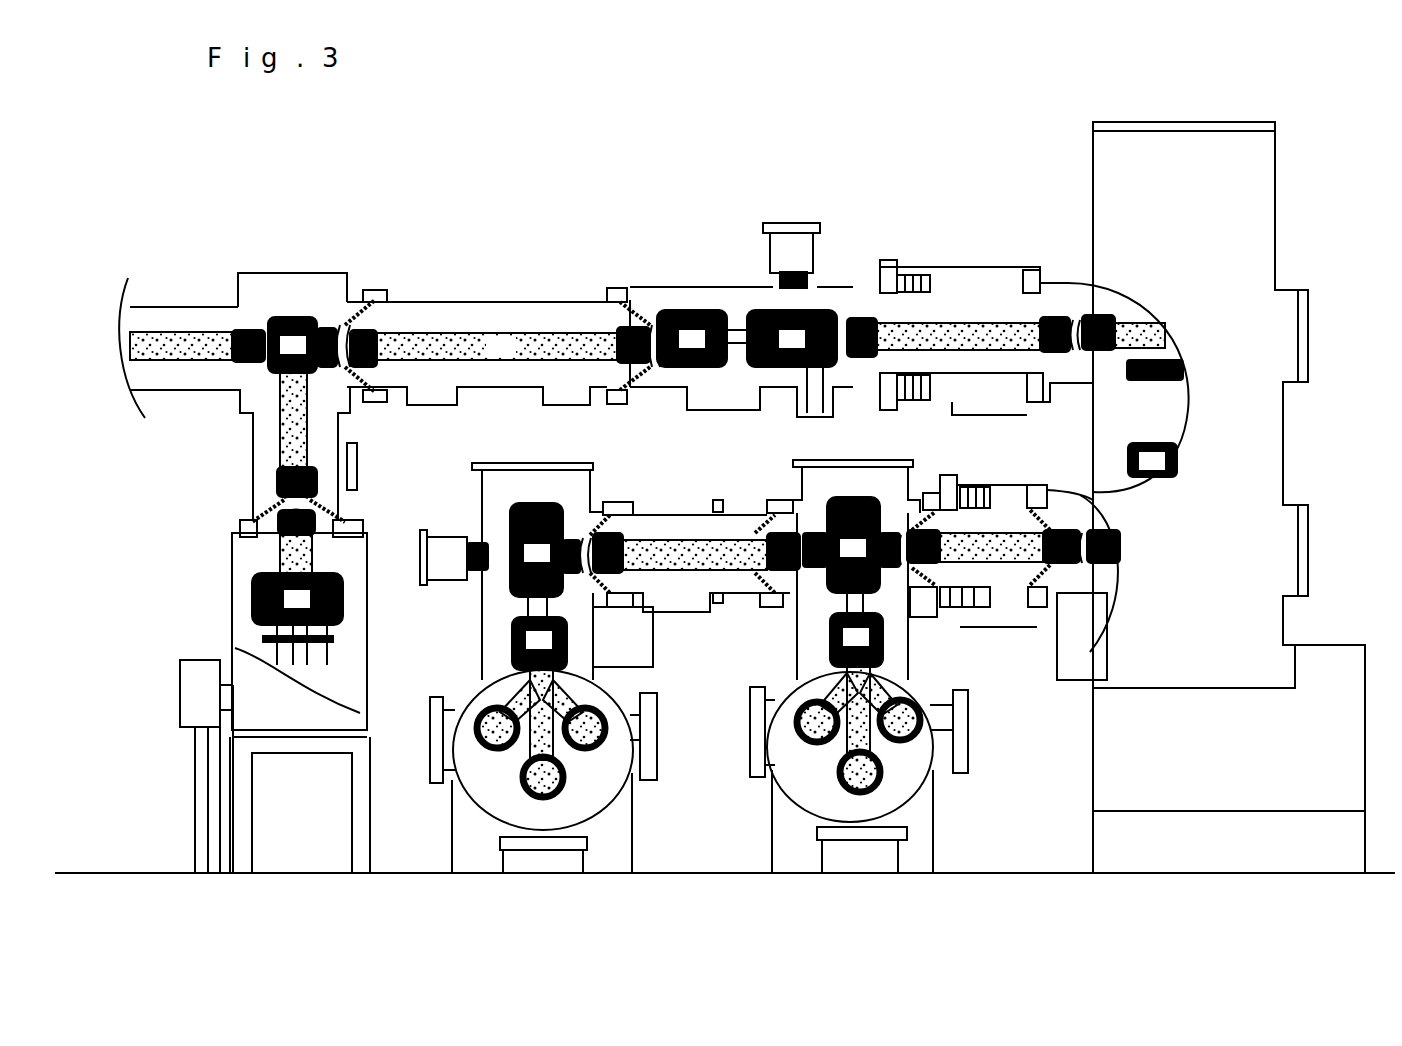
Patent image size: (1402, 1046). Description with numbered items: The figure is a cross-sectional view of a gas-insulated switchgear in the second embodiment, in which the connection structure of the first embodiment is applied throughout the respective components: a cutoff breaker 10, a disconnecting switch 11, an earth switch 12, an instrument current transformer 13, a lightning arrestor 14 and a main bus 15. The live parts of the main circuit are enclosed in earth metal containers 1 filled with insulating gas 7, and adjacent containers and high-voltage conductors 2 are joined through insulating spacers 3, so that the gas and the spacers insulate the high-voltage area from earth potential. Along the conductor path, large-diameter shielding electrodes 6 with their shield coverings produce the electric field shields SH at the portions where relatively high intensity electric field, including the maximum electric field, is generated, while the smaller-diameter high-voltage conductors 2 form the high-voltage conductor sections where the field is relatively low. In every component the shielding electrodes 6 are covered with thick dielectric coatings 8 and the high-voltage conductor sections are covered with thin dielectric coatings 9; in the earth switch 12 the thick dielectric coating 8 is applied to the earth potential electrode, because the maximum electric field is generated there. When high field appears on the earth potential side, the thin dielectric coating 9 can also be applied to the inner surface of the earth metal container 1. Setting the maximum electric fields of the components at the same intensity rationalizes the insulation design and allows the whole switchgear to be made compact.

The earth metal container 1 is at (175, 308).
The high-voltage conductor 2 is at (500, 333).
The insulating spacer 3 is at (345, 335).
The shielding electrode 6 is at (292, 318).
The insulating gas 7 is at (262, 290).
The thick dielectric coating 8 is at (240, 332).
The thin dielectric coating 9 is at (195, 332).
The cutoff breaker 10 is at (1290, 450).
The disconnecting switch 11 is at (735, 283).
The earth switch 12 is at (790, 222).
The instrument current transformer 13 is at (955, 275).
The lightning arrestor 14 is at (232, 553).
The main bus 15 is at (473, 790).